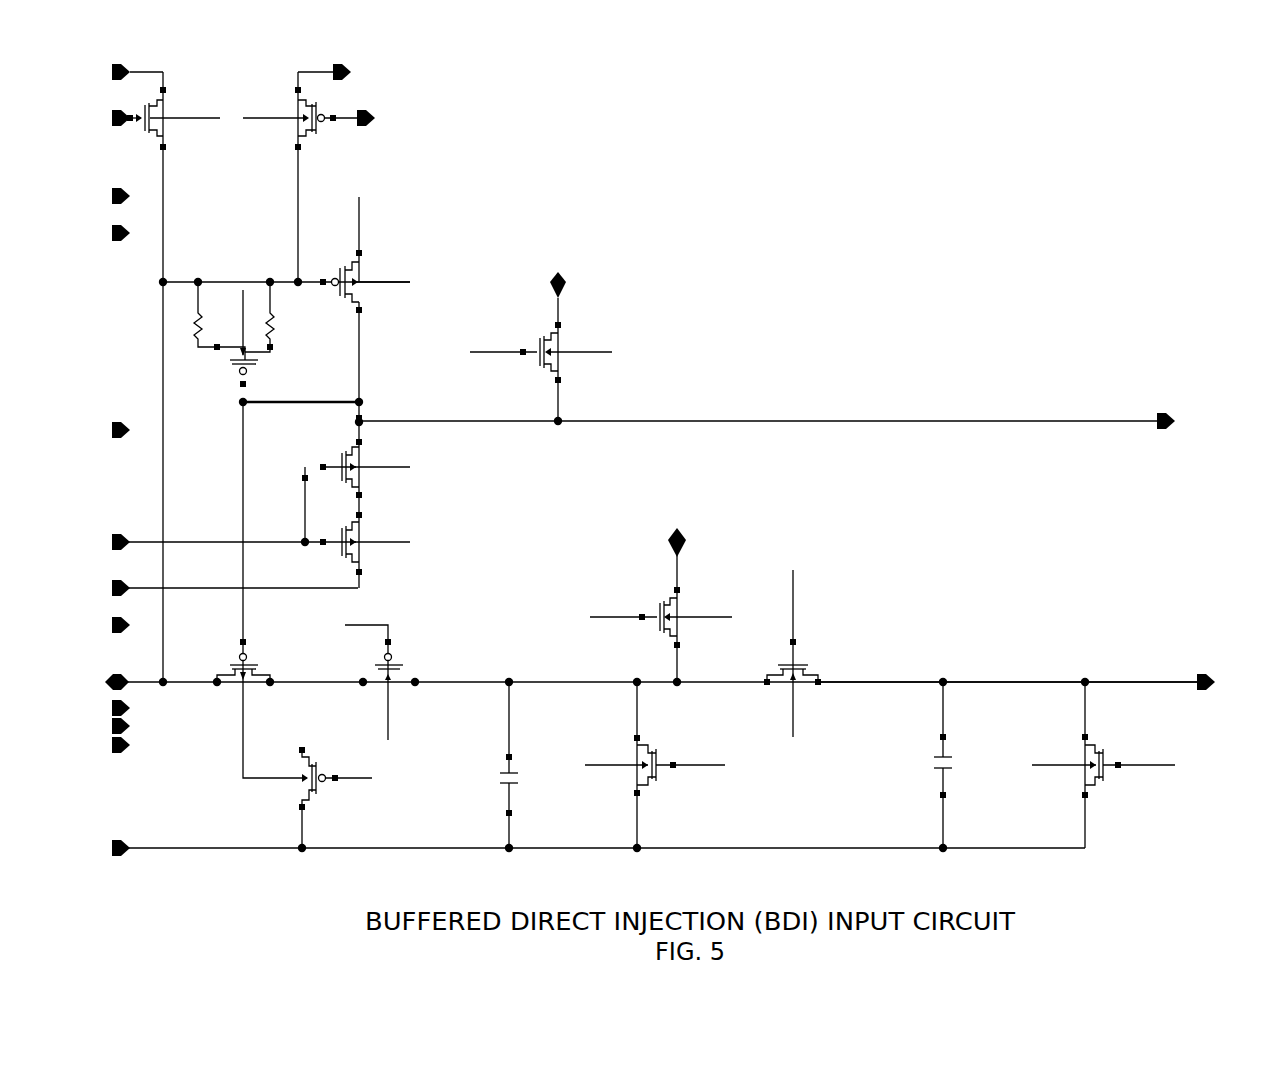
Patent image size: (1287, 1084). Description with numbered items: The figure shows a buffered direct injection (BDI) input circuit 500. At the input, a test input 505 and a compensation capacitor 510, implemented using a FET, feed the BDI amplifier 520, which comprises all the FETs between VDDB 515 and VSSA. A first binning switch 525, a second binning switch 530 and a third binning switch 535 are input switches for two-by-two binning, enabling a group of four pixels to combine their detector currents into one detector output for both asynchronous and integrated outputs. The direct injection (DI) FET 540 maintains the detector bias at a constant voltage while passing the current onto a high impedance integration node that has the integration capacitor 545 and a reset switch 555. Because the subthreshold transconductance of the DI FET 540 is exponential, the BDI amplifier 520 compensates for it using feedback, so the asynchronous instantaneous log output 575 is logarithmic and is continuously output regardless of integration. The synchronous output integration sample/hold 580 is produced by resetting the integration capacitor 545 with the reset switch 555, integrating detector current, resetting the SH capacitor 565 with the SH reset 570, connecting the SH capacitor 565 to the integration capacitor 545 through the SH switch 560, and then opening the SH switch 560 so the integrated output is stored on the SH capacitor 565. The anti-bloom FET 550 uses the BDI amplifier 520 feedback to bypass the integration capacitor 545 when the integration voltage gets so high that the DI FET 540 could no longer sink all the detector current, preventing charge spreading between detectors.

The buffered direct injection input circuit 500 is at (1285, 66).
The test input 505 is at (110, 137).
The compensation capacitor 510 is at (198, 300).
The VDDB 515 is at (363, 222).
The BDI amplifier 520 is at (275, 358).
The binning switch 1 525 is at (326, 107).
The binning switch 2 530 is at (575, 332).
The binning switch 3 535 is at (668, 598).
The direct injection FET 540 is at (234, 660).
The integration capacitor 545 is at (521, 770).
The anti-bloom FET 550 is at (310, 793).
The reset switch 555 is at (684, 767).
The sample/hold switch 560 is at (789, 658).
The SH capacitor 565 is at (930, 772).
The SH reset 570 is at (1115, 806).
The asynchronous instantaneous log output 575 is at (767, 325).
The synchronous output integration sample/hold 580 is at (1024, 591).